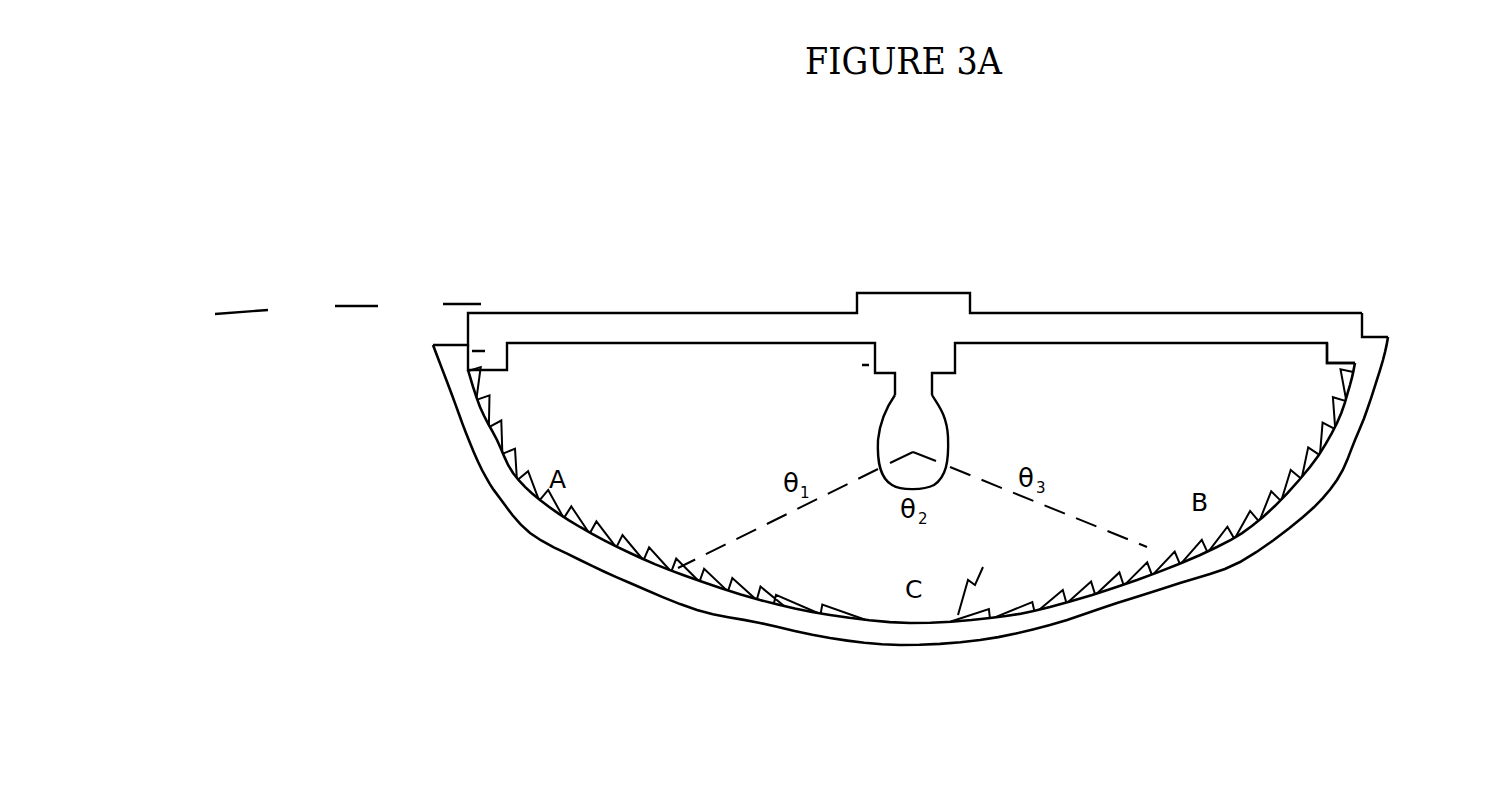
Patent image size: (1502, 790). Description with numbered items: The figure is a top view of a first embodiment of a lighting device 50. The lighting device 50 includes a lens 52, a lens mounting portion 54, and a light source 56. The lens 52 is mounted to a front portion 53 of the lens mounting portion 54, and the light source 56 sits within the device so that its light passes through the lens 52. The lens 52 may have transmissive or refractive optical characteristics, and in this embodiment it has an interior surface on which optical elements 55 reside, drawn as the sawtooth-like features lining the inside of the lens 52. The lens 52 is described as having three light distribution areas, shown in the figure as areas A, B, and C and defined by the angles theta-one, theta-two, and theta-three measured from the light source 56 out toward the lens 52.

The lighting device 50 is at (1064, 228).
The lens 52 is at (1143, 600).
The front portion 53 is at (1388, 337).
The lens mounting portion 54 is at (1362, 313).
The optical elements 55 is at (718, 579).
The light source 56 is at (948, 417).